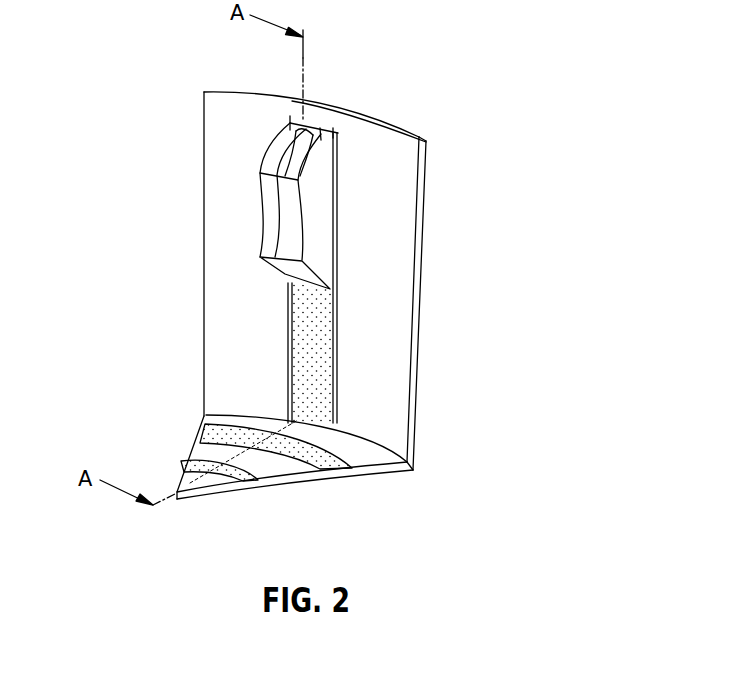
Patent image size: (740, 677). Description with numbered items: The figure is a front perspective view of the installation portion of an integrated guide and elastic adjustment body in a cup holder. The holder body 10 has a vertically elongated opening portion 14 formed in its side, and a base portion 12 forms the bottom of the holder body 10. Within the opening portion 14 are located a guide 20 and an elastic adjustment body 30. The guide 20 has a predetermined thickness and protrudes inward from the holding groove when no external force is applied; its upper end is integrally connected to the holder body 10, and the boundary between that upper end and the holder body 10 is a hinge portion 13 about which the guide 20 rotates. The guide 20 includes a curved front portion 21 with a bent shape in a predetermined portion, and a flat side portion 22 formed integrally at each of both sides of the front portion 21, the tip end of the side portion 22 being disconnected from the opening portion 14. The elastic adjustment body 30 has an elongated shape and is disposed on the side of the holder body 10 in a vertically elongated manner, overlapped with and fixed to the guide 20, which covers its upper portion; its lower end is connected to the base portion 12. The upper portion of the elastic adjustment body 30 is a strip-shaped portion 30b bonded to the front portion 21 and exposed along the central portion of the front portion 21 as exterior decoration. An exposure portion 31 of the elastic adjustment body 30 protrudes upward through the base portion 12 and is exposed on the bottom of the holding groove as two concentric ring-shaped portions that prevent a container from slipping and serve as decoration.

The holder body 10 is at (443, 202).
The base portion 12 is at (362, 452).
The hinge portion 13 is at (303, 120).
The opening portion 14 is at (325, 384).
The guide 20 is at (365, 224).
The front portion 21 is at (319, 135).
The side portion 22 is at (330, 177).
The elastic adjustment body 30 is at (237, 273).
The strip-shaped portion 30b is at (290, 215).
The exposure portion 31 is at (227, 435).